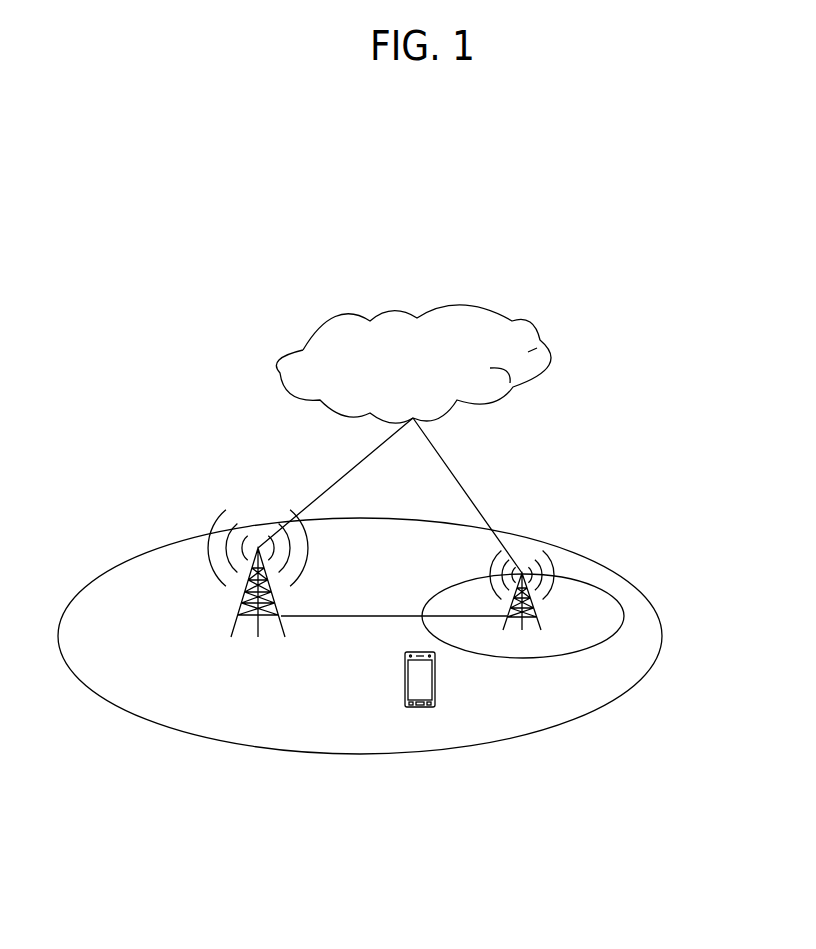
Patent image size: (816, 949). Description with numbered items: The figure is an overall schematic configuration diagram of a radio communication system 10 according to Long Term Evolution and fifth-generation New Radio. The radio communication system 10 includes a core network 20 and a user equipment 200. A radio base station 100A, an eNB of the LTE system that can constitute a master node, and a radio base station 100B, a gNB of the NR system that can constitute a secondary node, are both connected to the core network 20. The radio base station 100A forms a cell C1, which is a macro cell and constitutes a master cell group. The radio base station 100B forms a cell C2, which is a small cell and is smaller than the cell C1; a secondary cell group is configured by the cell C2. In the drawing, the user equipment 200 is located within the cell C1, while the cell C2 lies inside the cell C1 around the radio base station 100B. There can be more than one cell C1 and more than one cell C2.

The radio communication system 10 is at (655, 300).
The core network 20 is at (490, 310).
The radio base station 100A is at (238, 607).
The radio base station 100B is at (540, 607).
The user equipment 200 is at (418, 708).
The cell C1 is at (230, 741).
The cell C2 is at (625, 619).